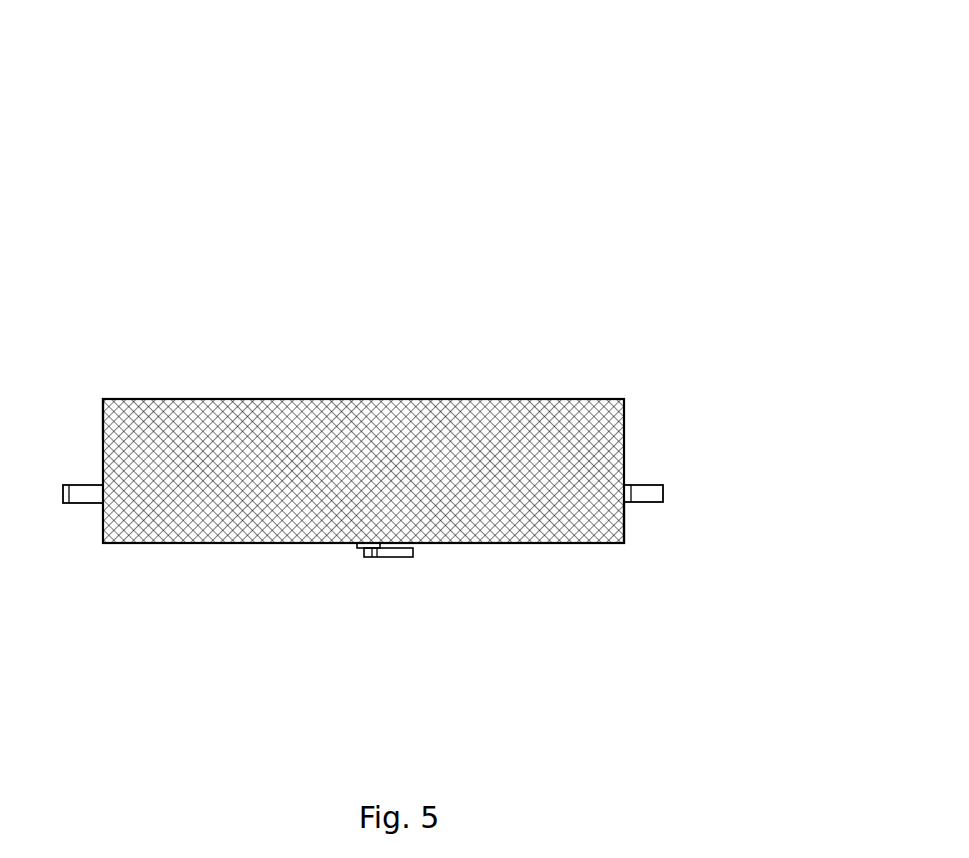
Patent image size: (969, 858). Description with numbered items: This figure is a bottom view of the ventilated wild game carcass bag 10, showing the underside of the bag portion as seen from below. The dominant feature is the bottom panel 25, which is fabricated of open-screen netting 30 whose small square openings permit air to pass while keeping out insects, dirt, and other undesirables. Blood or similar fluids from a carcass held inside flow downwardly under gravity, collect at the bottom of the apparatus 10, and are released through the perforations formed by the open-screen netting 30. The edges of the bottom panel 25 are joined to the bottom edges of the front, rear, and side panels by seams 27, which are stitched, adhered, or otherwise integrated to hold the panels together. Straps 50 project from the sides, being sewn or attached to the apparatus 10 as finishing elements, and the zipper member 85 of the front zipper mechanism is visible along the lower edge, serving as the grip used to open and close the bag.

The ventilated wild game carcass bag 10 is at (580, 150).
The bottom panel 25 is at (330, 440).
The open-screen netting 30 is at (506, 430).
The seams 27 is at (165, 400).
The straps 50 is at (643, 490).
The zipper member 85 is at (380, 555).